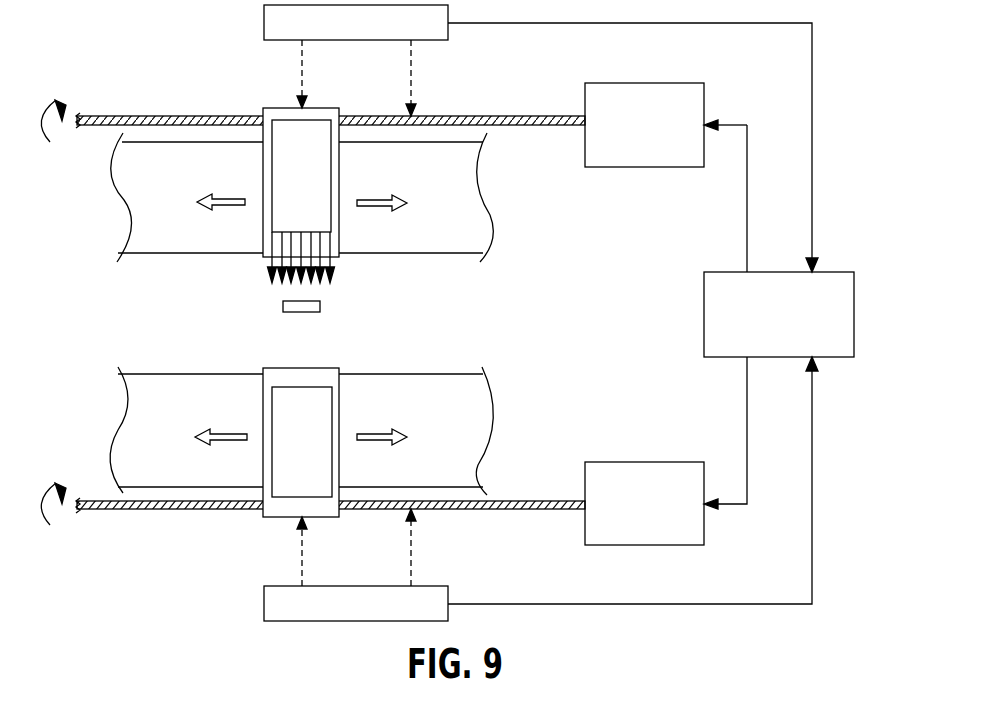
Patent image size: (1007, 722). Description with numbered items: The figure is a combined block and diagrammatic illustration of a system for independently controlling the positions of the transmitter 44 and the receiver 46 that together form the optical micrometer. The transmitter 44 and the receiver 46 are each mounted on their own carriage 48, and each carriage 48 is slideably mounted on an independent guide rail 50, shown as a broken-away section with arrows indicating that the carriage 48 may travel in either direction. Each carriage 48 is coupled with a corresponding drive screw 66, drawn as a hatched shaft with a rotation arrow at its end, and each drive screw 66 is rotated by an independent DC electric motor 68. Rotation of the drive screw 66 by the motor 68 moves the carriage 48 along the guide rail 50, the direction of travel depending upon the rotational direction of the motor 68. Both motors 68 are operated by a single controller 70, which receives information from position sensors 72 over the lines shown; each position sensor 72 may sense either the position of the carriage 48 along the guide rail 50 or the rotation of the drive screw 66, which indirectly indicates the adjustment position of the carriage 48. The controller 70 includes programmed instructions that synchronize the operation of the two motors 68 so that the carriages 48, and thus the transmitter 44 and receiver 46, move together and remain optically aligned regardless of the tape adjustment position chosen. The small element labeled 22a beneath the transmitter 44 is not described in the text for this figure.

The target element 22a is at (320, 306).
The transmitter 44 is at (315, 209).
The receiver 46 is at (278, 462).
The carriage 48 is at (263, 230).
The guide rail 50 is at (148, 220).
The drive screw 66 is at (157, 116).
The DC electric motor 68 is at (642, 167).
The controller 70 is at (704, 312).
The position sensor 72 is at (264, 17).